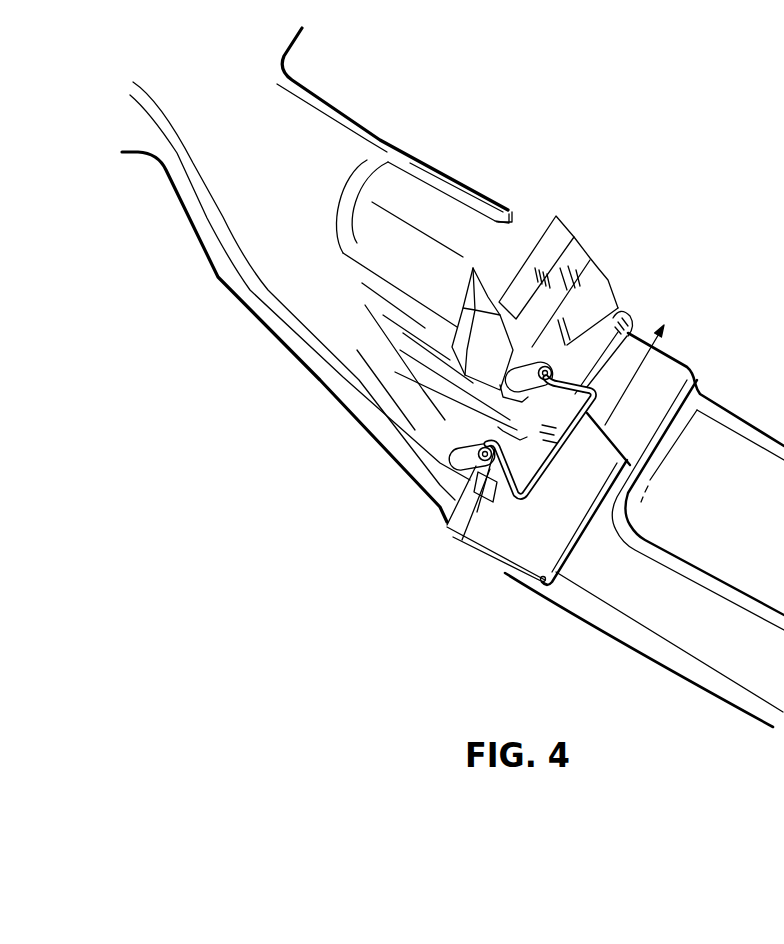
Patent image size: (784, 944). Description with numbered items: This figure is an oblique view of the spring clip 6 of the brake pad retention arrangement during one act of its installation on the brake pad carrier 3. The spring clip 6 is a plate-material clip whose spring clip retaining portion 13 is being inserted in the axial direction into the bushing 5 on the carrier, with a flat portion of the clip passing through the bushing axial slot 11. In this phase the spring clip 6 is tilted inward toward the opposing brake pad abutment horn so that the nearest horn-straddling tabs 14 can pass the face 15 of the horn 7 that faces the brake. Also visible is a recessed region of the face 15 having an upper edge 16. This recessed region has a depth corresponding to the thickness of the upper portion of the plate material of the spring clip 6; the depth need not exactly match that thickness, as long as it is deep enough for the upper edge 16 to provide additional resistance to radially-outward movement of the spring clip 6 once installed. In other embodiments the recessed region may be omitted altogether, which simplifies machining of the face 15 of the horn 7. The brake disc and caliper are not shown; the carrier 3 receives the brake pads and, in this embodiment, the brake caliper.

The brake pad carrier 3 is at (217, 274).
The bushing 5 is at (628, 318).
The spring clip 6 is at (500, 573).
The horn 7 is at (540, 240).
The bushing axial slot 11 is at (628, 338).
The spring clip retaining portion 13 is at (447, 527).
The horn-straddling tabs 14 is at (490, 487).
The face of the horn 15 is at (520, 335).
The upper edge 16 is at (513, 323).